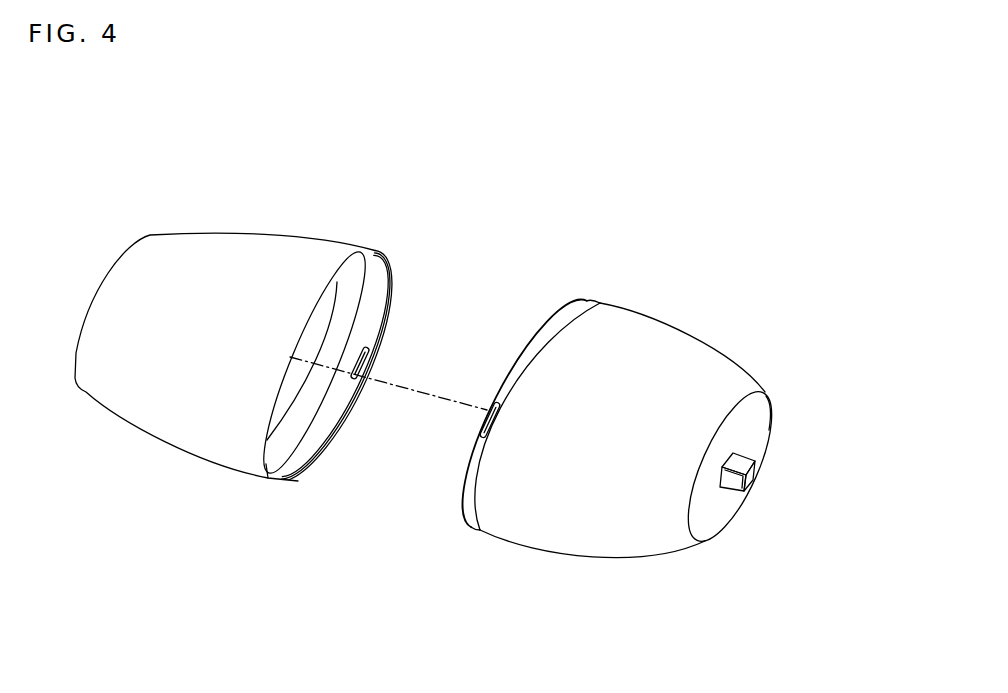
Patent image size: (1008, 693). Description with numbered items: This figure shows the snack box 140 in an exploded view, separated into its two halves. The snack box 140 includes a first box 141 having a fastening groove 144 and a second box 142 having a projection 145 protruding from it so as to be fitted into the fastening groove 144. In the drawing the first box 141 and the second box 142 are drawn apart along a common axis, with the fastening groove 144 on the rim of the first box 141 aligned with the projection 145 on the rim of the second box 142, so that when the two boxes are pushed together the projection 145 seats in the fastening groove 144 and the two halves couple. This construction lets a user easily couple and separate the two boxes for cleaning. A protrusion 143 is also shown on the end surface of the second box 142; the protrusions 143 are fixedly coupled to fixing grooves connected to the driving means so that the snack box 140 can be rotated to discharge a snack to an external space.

The snack box 140 is at (500, 150).
The first box 141 is at (273, 252).
The second box 142 is at (638, 347).
The protrusion 143 is at (753, 477).
The fastening groove 144 is at (365, 357).
The projection 145 is at (482, 418).